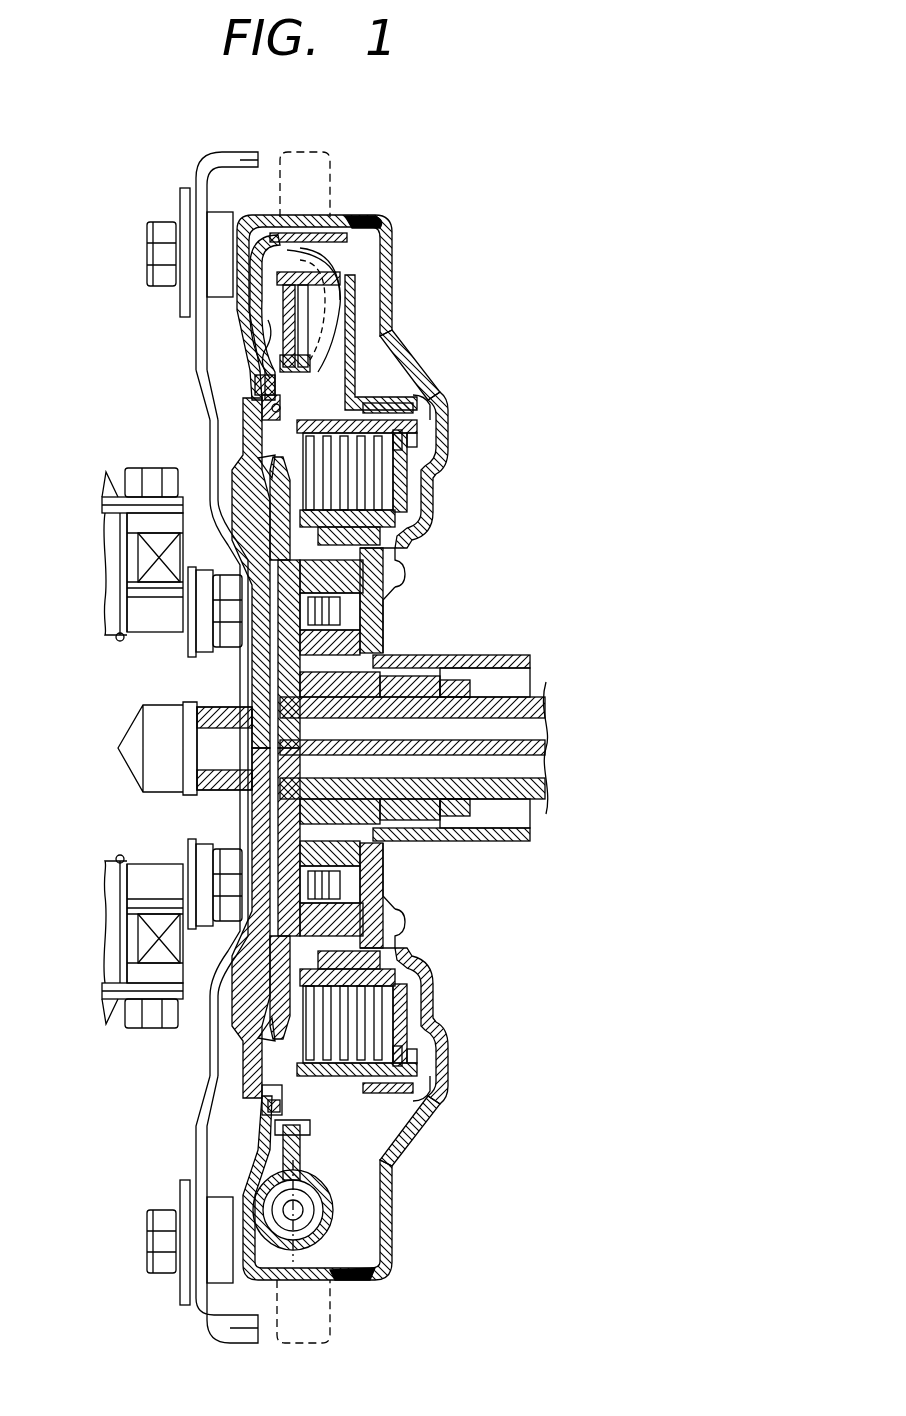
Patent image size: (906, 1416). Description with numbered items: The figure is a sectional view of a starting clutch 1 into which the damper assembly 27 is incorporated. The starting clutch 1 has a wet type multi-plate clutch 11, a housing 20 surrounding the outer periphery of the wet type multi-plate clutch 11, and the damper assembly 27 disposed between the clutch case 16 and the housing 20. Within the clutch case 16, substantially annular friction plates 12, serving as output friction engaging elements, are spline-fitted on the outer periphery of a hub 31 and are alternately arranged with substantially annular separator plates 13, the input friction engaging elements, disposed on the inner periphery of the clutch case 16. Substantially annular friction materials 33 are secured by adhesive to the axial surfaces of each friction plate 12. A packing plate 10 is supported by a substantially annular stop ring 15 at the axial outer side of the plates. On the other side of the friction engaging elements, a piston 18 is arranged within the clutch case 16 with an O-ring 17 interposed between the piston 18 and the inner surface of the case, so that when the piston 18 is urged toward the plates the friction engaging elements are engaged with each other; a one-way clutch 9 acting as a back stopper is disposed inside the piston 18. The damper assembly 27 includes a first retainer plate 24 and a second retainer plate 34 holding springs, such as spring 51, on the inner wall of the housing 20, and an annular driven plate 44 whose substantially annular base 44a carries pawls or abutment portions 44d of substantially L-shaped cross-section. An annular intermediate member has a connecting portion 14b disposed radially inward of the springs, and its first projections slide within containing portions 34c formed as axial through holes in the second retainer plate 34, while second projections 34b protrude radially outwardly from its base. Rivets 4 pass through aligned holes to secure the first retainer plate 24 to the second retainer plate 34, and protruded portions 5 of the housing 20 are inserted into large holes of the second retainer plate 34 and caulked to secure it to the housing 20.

The starting clutch 1 is at (452, 254).
The rivets 4 is at (280, 1108).
The protruded portions 5 is at (262, 398).
The one-way clutch 9 is at (352, 600).
The packing plate 10 is at (380, 498).
The wet type multi-plate clutch 11 is at (397, 462).
The friction plates 12 is at (438, 402).
The separator plates 13 is at (405, 424).
The connecting portion 14b is at (262, 345).
The stop ring 15 is at (418, 440).
The clutch case 16 is at (262, 456).
The O-ring 17 is at (280, 450).
The piston 18 is at (240, 526).
The housing 20 is at (270, 222).
The first retainer plate 24 is at (332, 235).
The damper assembly 27 is at (335, 290).
The hub 31 is at (340, 553).
The friction materials 33 is at (210, 484).
The second retainer plate 34 is at (310, 343).
The second projections 34b is at (282, 372).
The containing portions 34c is at (302, 1130).
The driven plate 44 is at (350, 295).
The base 44a is at (258, 384).
The pawls 44d is at (245, 246).
The spring 51 is at (346, 259).